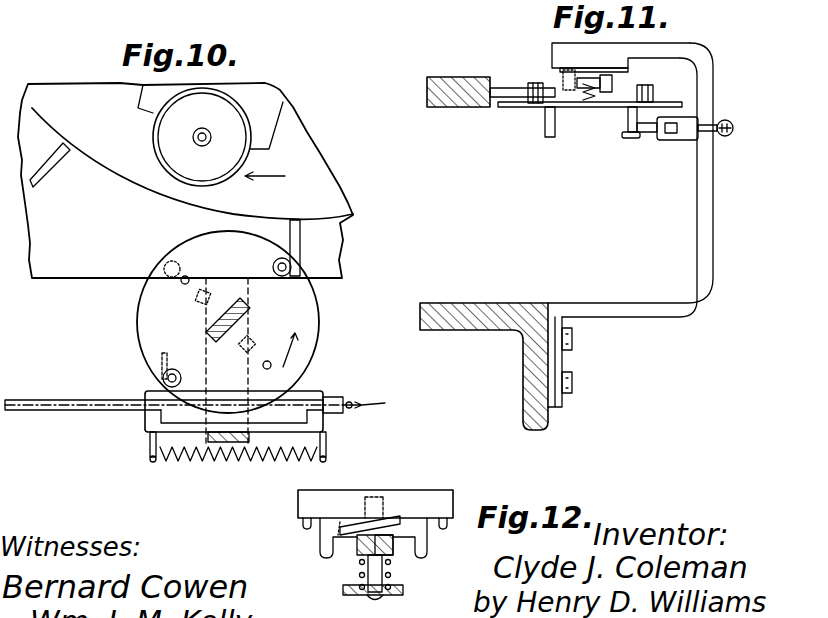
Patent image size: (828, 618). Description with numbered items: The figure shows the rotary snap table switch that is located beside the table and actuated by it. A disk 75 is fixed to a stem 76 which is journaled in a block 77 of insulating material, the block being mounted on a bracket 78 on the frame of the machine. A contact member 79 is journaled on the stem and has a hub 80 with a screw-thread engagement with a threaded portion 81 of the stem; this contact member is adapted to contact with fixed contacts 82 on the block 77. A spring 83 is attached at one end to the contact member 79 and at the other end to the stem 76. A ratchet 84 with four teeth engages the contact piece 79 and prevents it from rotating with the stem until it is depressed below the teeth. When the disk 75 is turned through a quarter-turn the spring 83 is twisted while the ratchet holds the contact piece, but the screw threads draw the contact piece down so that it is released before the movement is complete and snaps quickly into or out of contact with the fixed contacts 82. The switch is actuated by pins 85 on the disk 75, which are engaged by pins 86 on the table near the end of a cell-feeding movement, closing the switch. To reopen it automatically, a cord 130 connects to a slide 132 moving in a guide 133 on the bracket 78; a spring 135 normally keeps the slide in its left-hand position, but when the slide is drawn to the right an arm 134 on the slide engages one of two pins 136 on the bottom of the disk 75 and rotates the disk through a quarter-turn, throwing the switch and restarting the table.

In FIG. 10, the disk 75 is at (305, 312).
In FIG. 11, the disk 75 is at (517, 107).
In FIG. 12, the disk 75 is at (403, 592).
In FIG. 12, the stem 76 is at (383, 586).
In FIG. 11, the block 77 is at (556, 60).
In FIG. 12, the block 77 is at (437, 498).
In FIG. 10, the bracket 78 is at (200, 457).
In FIG. 11, the bracket 78 is at (703, 200).
In FIG. 10, the contact member 79 is at (244, 314).
In FIG. 11, the contact member 79 is at (612, 82).
In FIG. 12, the contact member 79 is at (338, 528).
In FIG. 12, the hub 80 is at (362, 545).
In FIG. 12, the threaded portion 81 is at (383, 550).
In FIG. 10, the fixed contacts 82 is at (196, 300).
In FIG. 12, the fixed contacts 82 is at (320, 547).
In FIG. 12, the spring 83 is at (363, 568).
In FIG. 12, the ratchet 84 is at (385, 527).
In FIG. 10, the pins 85 is at (274, 266).
In FIG. 11, the pins 85 is at (533, 85).
In FIG. 10, the pins 86 is at (50, 170).
In FIG. 11, the pins 86 is at (512, 93).
In FIG. 10, the cord 130 is at (372, 402).
In FIG. 10, the slide 132 is at (300, 400).
In FIG. 11, the slide 132 is at (670, 133).
In FIG. 10, the guide 133 is at (291, 425).
In FIG. 11, the guide 133 is at (693, 136).
In FIG. 10, the arm 134 is at (160, 365).
In FIG. 11, the arm 134 is at (645, 133).
In FIG. 10, the spring 135 is at (233, 446).
In FIG. 11, the spring 135 is at (726, 120).
In FIG. 10, the pins 136 is at (185, 277).
In FIG. 11, the pins 136 is at (627, 118).